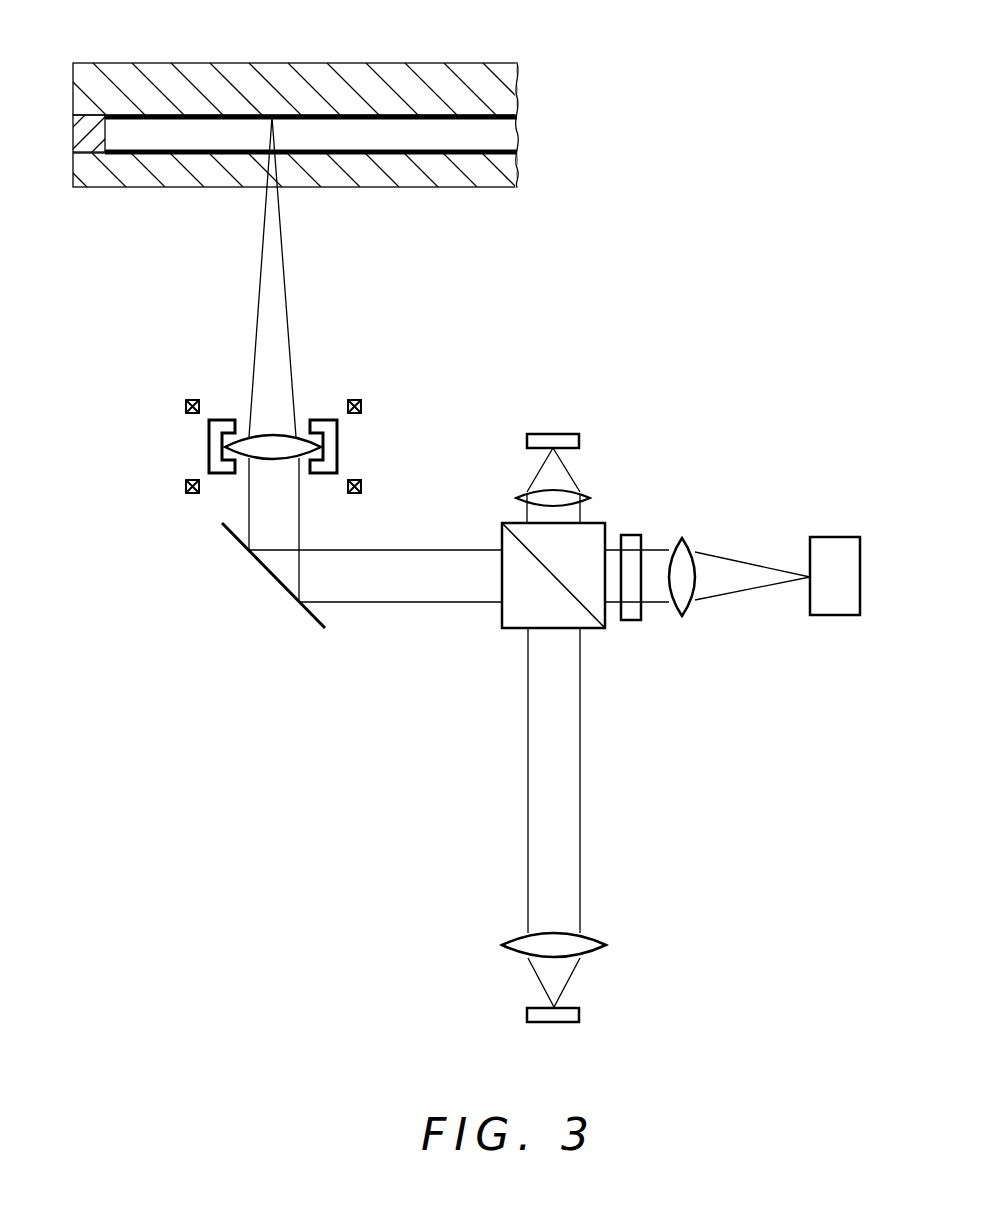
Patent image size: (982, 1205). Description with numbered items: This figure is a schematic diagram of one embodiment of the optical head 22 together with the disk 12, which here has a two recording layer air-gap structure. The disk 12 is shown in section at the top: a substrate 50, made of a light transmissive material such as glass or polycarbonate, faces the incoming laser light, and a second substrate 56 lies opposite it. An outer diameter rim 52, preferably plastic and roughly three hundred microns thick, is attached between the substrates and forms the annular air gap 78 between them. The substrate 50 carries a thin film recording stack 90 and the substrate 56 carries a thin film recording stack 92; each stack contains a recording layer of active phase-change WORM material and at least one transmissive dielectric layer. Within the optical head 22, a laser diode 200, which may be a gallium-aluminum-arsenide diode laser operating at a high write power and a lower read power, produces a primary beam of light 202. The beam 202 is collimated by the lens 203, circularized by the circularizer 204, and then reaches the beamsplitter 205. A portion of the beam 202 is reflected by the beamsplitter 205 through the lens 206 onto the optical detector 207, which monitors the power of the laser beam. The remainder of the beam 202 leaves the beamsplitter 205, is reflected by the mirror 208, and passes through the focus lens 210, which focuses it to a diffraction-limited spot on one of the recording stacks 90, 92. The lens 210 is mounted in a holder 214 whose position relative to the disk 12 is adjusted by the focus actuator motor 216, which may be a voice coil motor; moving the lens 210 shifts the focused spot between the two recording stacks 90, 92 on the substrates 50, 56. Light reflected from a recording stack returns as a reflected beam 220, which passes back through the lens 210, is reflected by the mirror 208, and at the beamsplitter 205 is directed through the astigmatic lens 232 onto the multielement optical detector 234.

The disk 12 is at (284, 175).
The substrate 50 is at (455, 172).
The outer diameter rim 52 is at (80, 135).
The second substrate 56 is at (455, 85).
The air gap 78 is at (330, 128).
The thin film recording stack 90 is at (150, 165).
The thin film recording stack 92 is at (147, 112).
The optical head 22 is at (641, 697).
The laser diode 200 is at (838, 536).
The primary beam of light 202 is at (768, 578).
The lens 203 is at (685, 536).
The circularizer 204 is at (633, 560).
The beamsplitter 205 is at (500, 532).
The lens 206 is at (520, 497).
The optical detector 207 is at (543, 433).
The mirror 208 is at (272, 580).
The focus lens 210 is at (302, 460).
The holder 214 is at (330, 419).
The focus actuator motor 216 is at (364, 407).
The reflected beam 220 is at (527, 660).
The astigmatic lens 232 is at (610, 945).
The multielement optical detector 234 is at (582, 1015).